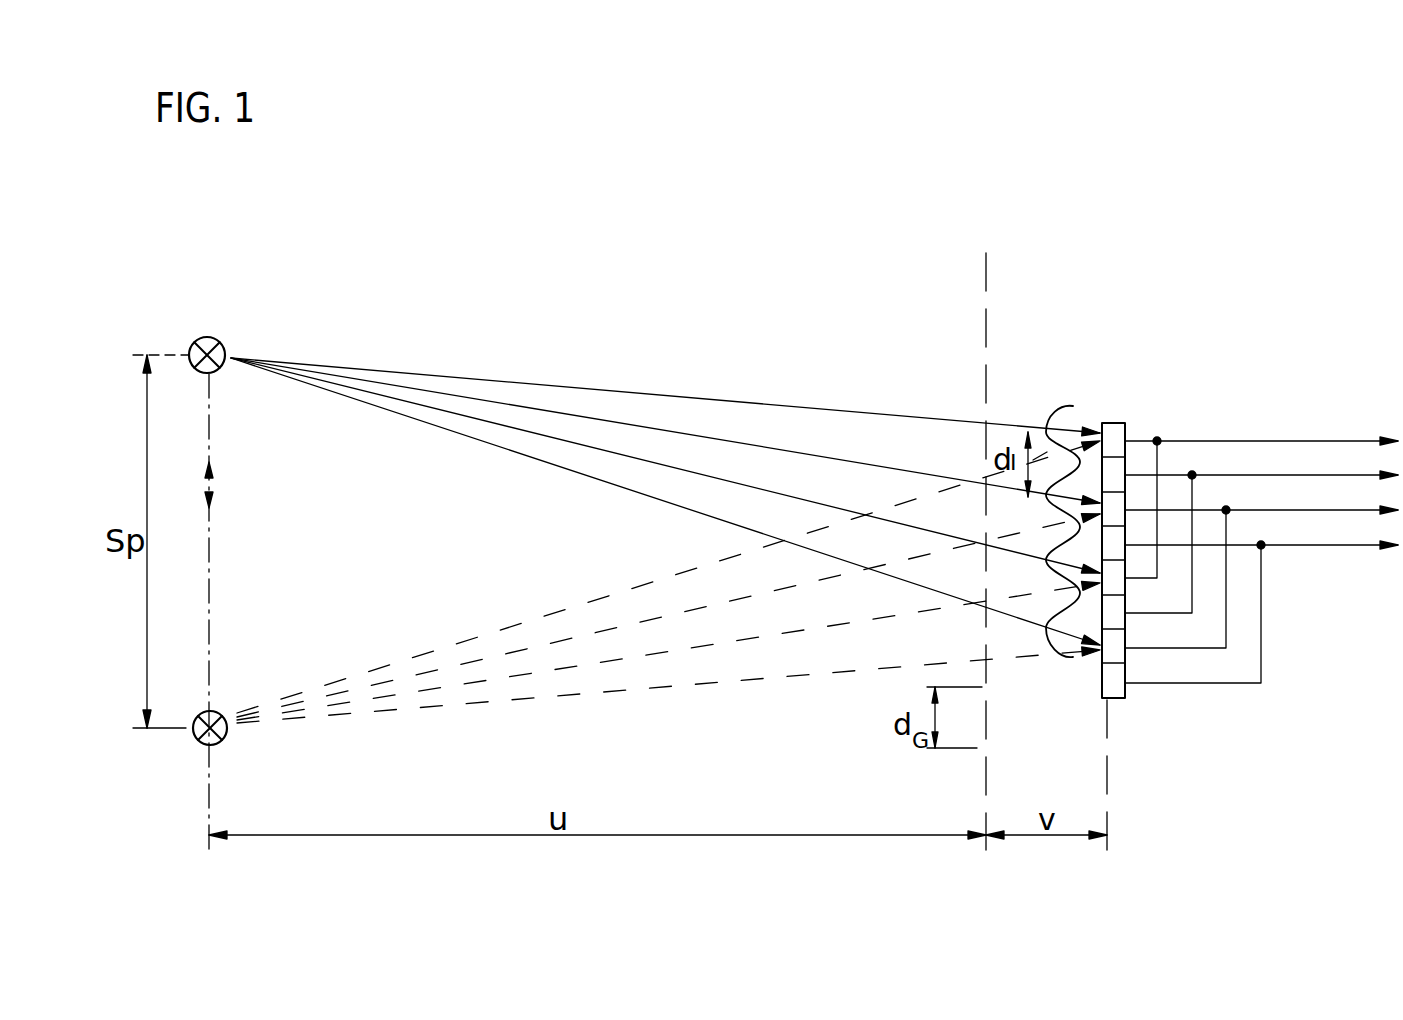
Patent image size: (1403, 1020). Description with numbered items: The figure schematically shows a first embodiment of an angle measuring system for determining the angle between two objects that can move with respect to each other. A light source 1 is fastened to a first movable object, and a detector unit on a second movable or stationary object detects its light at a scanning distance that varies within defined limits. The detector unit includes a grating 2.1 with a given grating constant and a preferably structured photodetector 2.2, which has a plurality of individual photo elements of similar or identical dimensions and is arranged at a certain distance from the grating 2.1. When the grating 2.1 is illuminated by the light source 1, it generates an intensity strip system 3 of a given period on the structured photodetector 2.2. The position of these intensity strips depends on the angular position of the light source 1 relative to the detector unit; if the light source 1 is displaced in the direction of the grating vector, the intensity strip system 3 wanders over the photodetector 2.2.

The light source 1 is at (212, 337).
The grating 2.1 is at (986, 288).
The structured photodetector 2.2 is at (1137, 423).
The intensity strip system 3 is at (1046, 412).